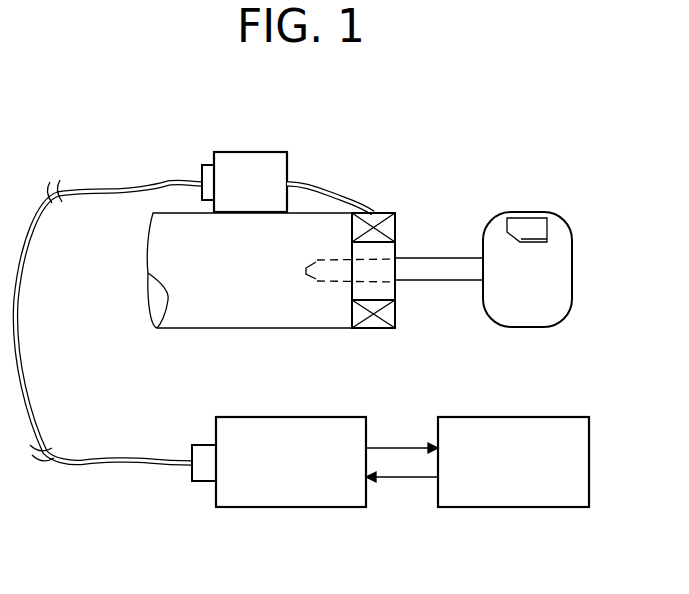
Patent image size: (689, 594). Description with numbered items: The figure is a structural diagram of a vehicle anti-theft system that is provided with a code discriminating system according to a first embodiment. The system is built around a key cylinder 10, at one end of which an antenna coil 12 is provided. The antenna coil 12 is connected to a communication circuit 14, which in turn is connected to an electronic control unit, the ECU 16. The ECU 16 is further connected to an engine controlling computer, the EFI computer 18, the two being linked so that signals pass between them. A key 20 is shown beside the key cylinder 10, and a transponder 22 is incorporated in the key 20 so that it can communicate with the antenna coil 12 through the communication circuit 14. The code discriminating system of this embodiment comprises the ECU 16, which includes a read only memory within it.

The key cylinder 10 is at (240, 317).
The antenna coil 12 is at (377, 322).
The communication circuit 14 is at (250, 152).
The electronic control unit (ECU) 16 is at (290, 493).
The engine controlling computer (EFI computer) 18 is at (520, 493).
The key 20 is at (558, 260).
The transponder 22 is at (522, 222).